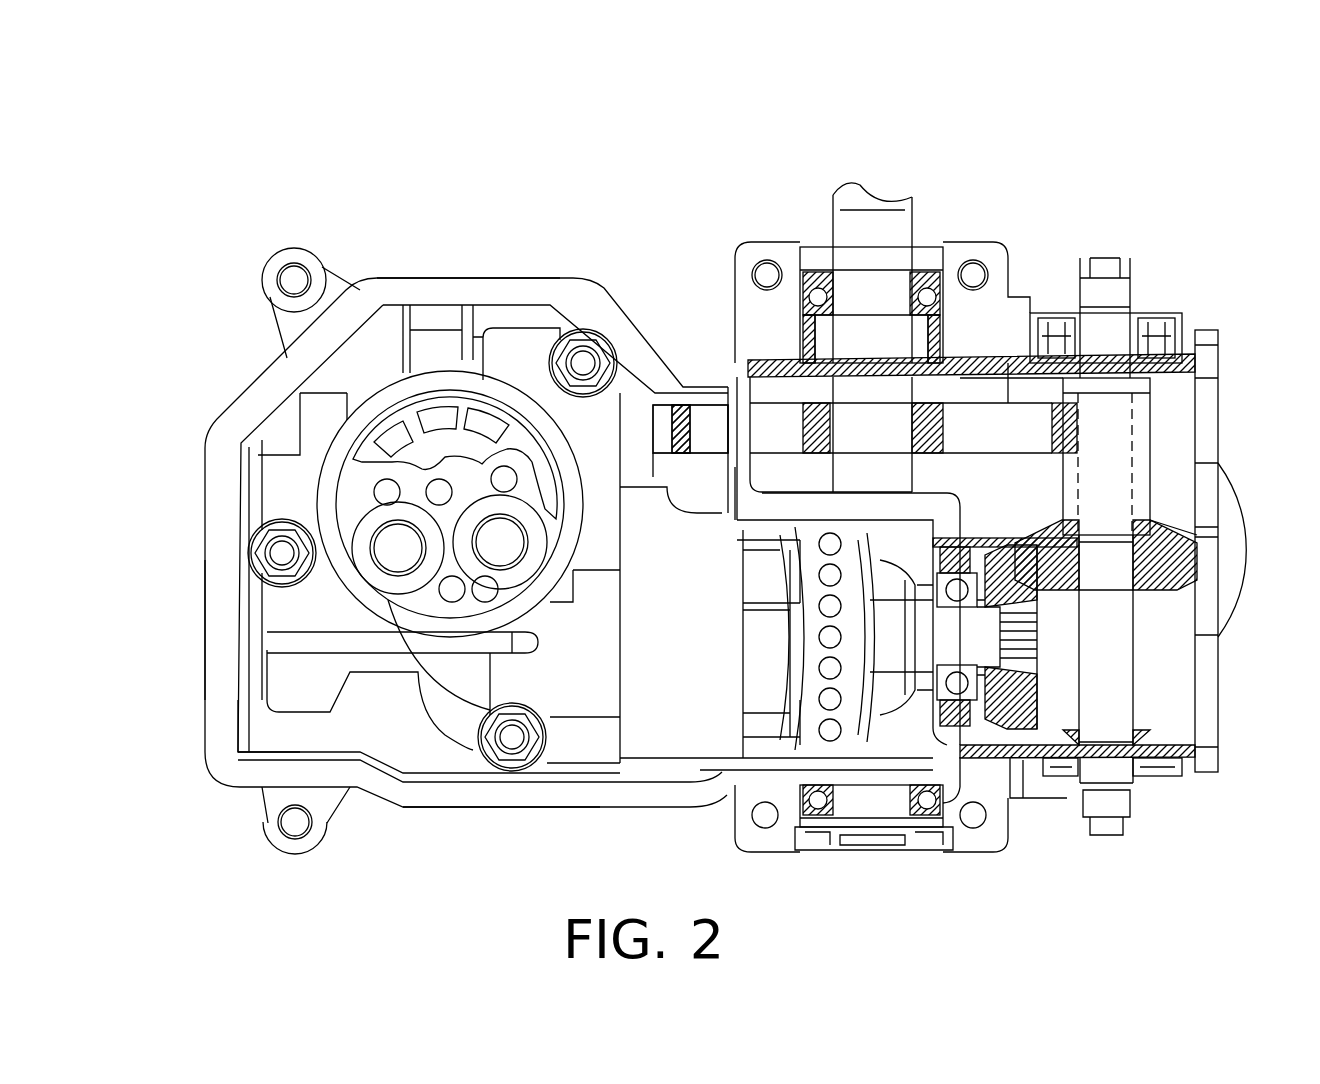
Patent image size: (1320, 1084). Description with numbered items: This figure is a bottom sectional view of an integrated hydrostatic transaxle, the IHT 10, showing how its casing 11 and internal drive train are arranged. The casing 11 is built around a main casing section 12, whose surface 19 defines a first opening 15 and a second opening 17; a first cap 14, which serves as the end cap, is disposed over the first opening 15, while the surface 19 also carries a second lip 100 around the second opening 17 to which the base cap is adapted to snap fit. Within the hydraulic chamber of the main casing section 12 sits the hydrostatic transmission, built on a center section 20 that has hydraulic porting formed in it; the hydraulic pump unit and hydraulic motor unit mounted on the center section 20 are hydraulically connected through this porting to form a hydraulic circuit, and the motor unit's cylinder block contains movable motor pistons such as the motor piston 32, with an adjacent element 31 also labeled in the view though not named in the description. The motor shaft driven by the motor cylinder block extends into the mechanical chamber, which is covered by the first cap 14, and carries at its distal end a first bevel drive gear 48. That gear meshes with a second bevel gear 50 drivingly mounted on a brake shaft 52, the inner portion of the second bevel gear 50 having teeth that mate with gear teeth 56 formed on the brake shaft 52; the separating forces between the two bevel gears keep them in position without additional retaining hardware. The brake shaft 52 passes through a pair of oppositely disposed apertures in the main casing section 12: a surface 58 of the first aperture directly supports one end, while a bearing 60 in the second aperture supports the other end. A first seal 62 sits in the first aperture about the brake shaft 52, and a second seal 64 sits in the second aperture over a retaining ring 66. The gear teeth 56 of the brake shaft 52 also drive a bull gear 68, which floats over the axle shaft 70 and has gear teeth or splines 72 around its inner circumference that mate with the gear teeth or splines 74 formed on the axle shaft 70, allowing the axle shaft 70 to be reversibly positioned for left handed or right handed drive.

The IHT 10 is at (721, 148).
The casing 11 is at (404, 840).
The main casing section 12 is at (472, 300).
The first cap 14 is at (1208, 417).
The first opening 15 is at (1234, 444).
The second opening 17 is at (194, 664).
The surface 19 is at (408, 277).
The center section 20 is at (345, 502).
The bearing 31 is at (778, 715).
The motor piston 32 is at (755, 633).
The first bevel drive gear 48 is at (1003, 712).
The second bevel gear 50 is at (1160, 577).
The brake shaft 52 is at (1115, 652).
The gear teeth 56 is at (1143, 492).
The surface 58 is at (1207, 748).
The bearing 60 is at (1180, 345).
The first seal 62 is at (1145, 760).
The second seal 64 is at (1150, 320).
The retaining ring 66 is at (1063, 323).
The bull gear 68 is at (973, 423).
The axle shaft 70 is at (745, 390).
The gear teeth or splines 72 is at (860, 440).
The gear teeth or splines 74 is at (830, 480).
The second lip 100 is at (237, 747).